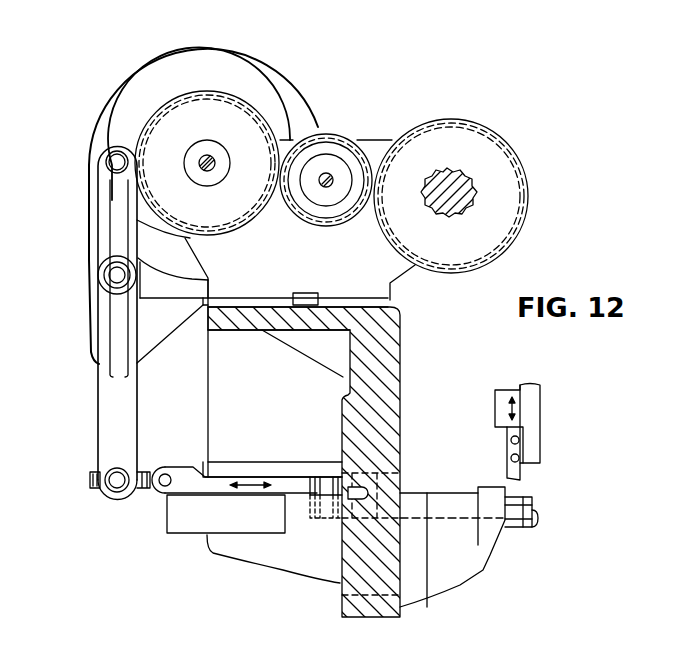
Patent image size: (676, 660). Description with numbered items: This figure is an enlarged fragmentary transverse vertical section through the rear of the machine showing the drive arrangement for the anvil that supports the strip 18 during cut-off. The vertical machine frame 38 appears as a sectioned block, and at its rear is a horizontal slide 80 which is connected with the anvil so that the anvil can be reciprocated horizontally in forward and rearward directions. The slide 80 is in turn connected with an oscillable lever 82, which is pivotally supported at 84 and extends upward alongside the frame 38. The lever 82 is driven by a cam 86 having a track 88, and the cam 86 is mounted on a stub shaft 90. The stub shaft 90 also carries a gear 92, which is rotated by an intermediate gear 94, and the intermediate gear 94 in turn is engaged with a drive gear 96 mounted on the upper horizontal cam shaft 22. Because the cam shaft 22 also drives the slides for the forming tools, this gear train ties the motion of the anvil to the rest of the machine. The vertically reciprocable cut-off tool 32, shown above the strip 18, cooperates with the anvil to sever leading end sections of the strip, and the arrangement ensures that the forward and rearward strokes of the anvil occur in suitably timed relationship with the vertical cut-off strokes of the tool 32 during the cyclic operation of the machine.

The strip 18 is at (532, 497).
The upper horizontal cam shaft 22 is at (473, 190).
The cut-off tool 32 is at (523, 447).
The machine frame 38 is at (392, 396).
The horizontal slide 80 is at (222, 498).
The oscillable lever 82 is at (98, 413).
The pivot 84 is at (106, 275).
The cam 86 is at (90, 130).
The track 88 is at (128, 123).
The stub shaft 90 is at (229, 178).
The gear 92 is at (220, 238).
The intermediate gear 94 is at (337, 127).
The drive gear 96 is at (483, 125).